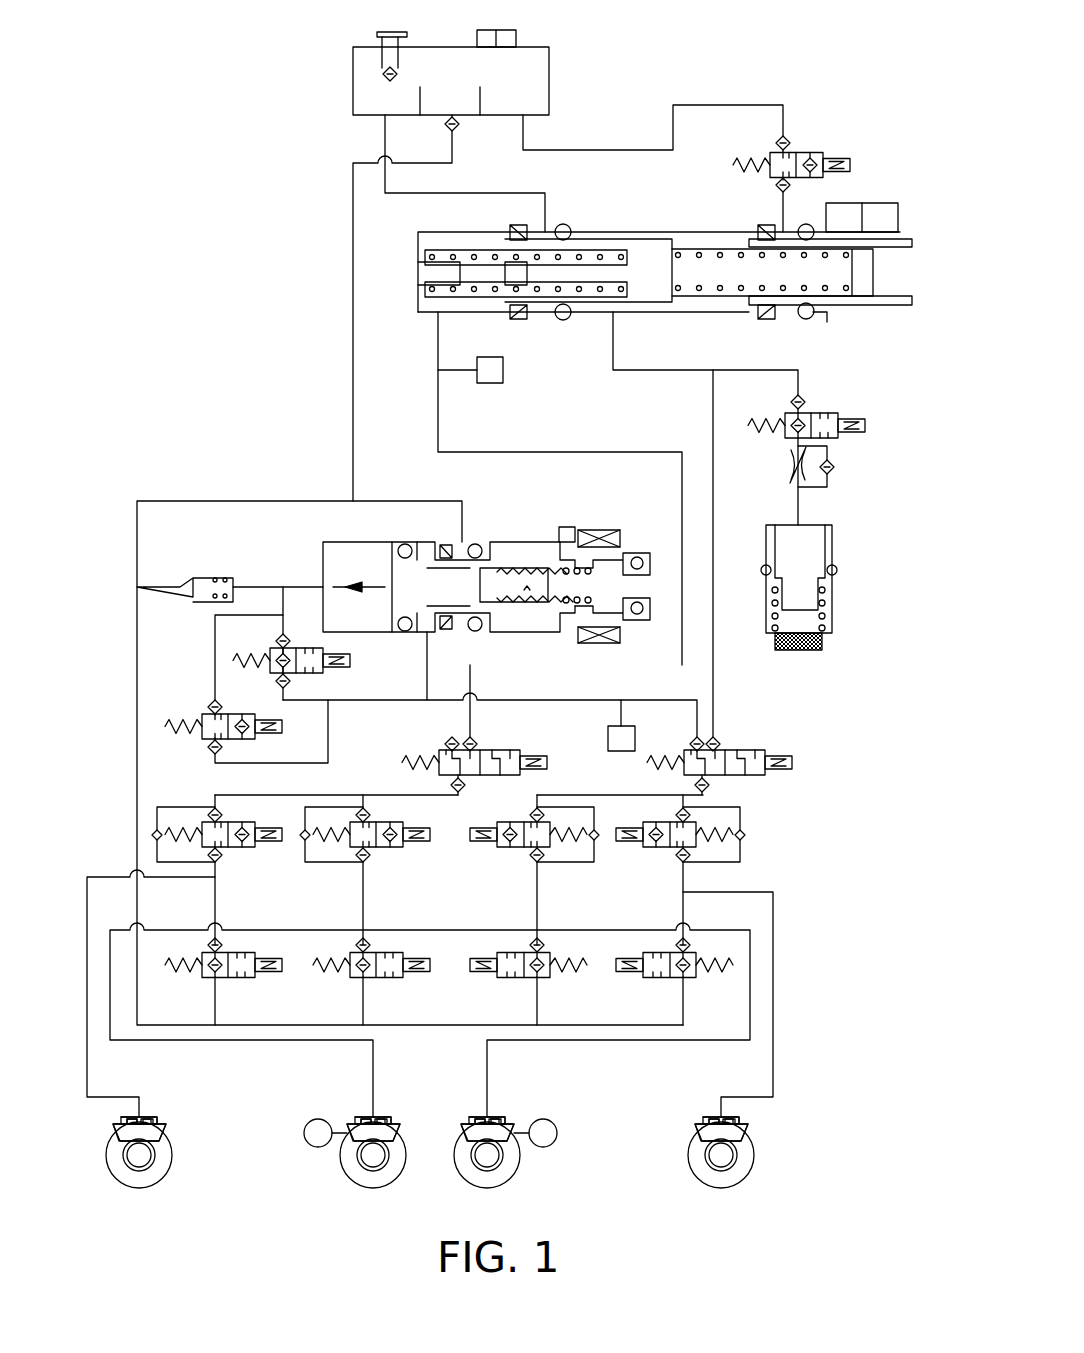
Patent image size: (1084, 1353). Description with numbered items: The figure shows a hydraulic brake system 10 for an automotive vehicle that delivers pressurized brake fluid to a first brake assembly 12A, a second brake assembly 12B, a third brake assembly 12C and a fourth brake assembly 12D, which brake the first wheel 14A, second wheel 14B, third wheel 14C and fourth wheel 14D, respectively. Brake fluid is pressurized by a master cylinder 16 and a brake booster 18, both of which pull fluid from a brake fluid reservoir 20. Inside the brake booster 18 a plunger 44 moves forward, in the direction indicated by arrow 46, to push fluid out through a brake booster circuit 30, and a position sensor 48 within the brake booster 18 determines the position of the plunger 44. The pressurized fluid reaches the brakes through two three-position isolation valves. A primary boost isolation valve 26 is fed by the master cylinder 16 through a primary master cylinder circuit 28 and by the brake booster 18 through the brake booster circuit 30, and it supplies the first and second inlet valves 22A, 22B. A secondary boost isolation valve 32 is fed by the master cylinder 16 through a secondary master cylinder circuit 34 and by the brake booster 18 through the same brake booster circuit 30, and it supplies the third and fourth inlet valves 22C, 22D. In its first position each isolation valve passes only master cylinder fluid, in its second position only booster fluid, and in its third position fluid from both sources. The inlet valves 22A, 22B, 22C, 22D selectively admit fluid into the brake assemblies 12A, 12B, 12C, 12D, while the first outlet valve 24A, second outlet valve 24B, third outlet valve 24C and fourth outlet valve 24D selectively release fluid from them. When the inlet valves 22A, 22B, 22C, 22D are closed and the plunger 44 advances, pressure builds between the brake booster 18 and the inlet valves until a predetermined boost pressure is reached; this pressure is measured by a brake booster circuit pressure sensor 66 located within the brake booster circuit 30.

The hydraulic brake system 10 is at (208, 267).
The first brake assembly 12A is at (742, 1126).
The second brake assembly 12B is at (508, 1126).
The third brake assembly 12C is at (395, 1126).
The fourth brake assembly 12D is at (160, 1126).
The first wheel 14A is at (727, 1178).
The second wheel 14B is at (493, 1178).
The third wheel 14C is at (380, 1178).
The fourth wheel 14D is at (145, 1178).
The master cylinder 16 is at (665, 232).
The brake booster 18 is at (466, 595).
The brake fluid reservoir 20 is at (353, 78).
The first inlet valve 22A is at (662, 848).
The second inlet valve 22B is at (516, 848).
The third inlet valve 22C is at (384, 848).
The fourth inlet valve 22D is at (235, 848).
The first outlet valve 24A is at (660, 978).
The second outlet valve 24B is at (530, 978).
The third outlet valve 24C is at (384, 978).
The fourth outlet valve 24D is at (236, 978).
The primary boost isolation valve 26 is at (742, 750).
The primary master cylinder circuit 28 is at (713, 665).
The brake booster circuit 30 is at (562, 700).
The secondary boost isolation valve 32 is at (485, 777).
The secondary master cylinder circuit 34 is at (560, 452).
The plunger 44 is at (460, 600).
The arrow 46 is at (368, 587).
The position sensor 48 is at (570, 527).
The brake booster circuit pressure sensor 66 is at (608, 740).